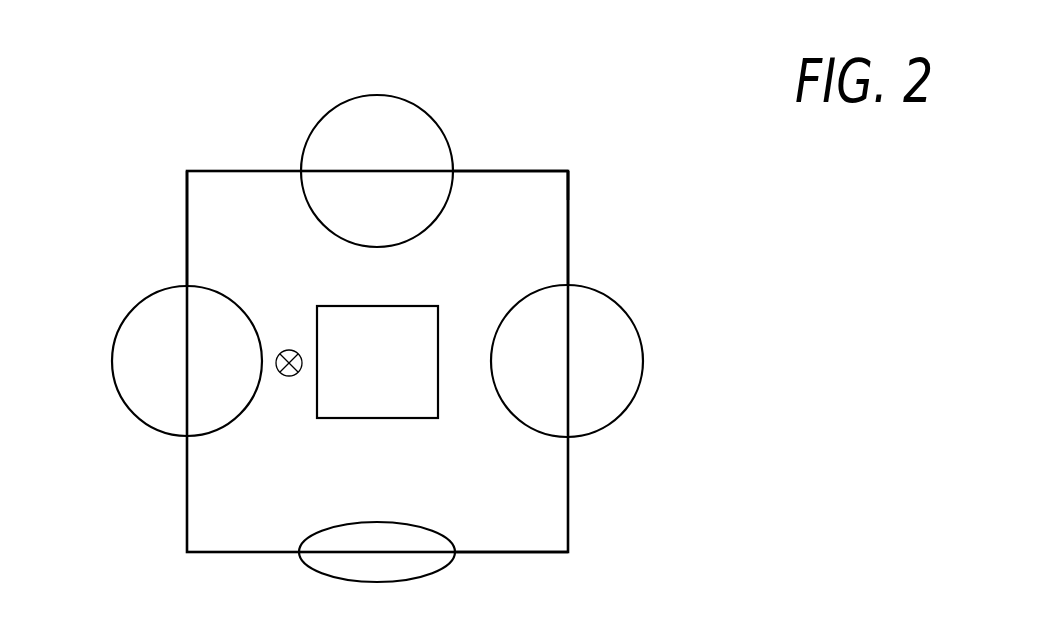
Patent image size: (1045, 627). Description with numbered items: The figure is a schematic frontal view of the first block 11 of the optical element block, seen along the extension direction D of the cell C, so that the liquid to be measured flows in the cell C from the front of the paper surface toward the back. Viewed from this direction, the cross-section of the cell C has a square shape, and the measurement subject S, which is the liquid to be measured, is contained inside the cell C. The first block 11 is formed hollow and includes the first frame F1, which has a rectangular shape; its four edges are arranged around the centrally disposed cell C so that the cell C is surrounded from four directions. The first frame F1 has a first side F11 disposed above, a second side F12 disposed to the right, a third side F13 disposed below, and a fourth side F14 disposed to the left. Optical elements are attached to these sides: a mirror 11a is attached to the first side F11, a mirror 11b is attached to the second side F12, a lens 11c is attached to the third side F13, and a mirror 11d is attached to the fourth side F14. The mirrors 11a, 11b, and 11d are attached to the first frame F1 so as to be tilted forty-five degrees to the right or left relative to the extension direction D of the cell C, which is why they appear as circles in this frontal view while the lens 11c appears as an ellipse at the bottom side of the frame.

The first block 11 is at (419, 78).
The mirror 11a is at (442, 130).
The mirror 11b is at (637, 332).
The lens 11c is at (410, 523).
The mirror 11d is at (120, 317).
The first side F11 is at (513, 171).
The second side F12 is at (568, 233).
The third side F13 is at (500, 552).
The fourth side F14 is at (187, 232).
The first frame F1 is at (568, 182).
The cell C is at (408, 306).
The measurement subject S is at (378, 380).
The extension direction D is at (289, 378).